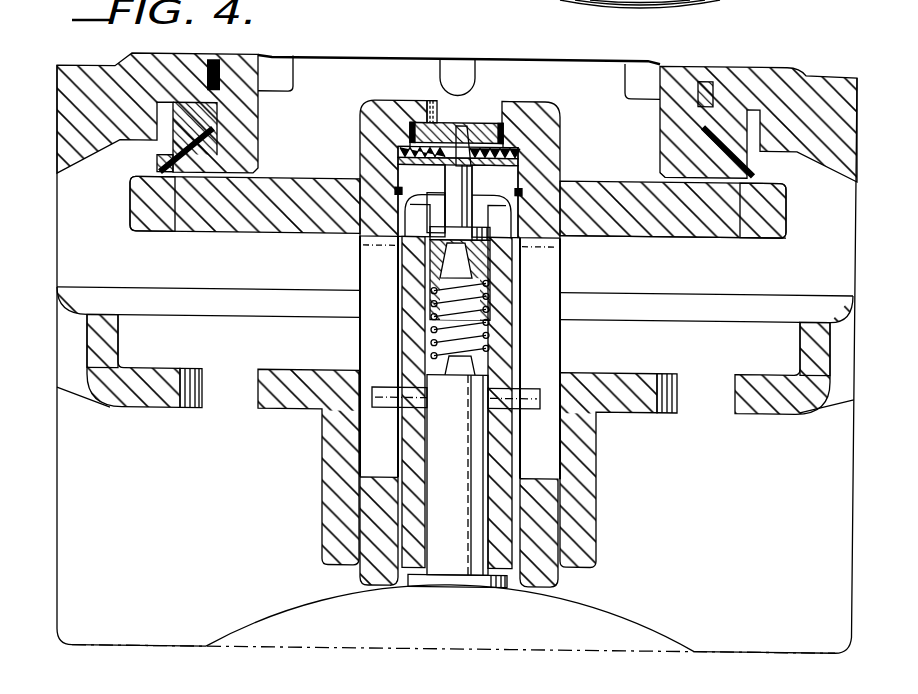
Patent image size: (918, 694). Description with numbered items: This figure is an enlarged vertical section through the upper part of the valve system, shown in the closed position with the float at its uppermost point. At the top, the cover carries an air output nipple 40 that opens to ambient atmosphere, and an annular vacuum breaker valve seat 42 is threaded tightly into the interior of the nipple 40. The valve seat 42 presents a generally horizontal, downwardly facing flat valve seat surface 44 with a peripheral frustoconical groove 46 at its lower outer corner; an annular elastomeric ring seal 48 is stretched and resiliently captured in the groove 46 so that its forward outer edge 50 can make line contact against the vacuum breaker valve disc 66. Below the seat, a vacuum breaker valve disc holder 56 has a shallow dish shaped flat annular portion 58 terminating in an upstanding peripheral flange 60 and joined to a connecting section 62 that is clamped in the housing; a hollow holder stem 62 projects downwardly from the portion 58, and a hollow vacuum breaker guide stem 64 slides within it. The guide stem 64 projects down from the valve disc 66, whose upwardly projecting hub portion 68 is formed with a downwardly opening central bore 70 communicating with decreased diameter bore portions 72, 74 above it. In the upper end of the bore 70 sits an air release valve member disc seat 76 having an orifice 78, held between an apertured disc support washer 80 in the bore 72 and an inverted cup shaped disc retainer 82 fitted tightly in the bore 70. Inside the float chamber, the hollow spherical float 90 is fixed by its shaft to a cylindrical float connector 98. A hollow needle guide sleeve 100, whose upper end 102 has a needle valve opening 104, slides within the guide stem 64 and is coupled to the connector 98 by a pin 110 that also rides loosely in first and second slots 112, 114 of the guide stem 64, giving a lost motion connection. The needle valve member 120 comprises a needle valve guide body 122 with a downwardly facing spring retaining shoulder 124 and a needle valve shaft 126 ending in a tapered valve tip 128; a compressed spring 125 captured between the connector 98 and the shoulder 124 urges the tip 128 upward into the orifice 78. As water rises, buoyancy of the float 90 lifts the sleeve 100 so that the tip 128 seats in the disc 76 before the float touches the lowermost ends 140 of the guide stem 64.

The air output nipple 40 is at (806, 69).
The annular vacuum breaker valve seat 42 is at (700, 47).
The flat valve seat surface 44 is at (232, 188).
The peripheral frustoconical groove 46 is at (178, 136).
The annular elastomeric ring seal 48 is at (155, 167).
The forward outer edge 50 is at (137, 200).
The vacuum breaker valve disc holder 56 is at (156, 424).
The shallow dish shaped flat annular portion 58 is at (181, 415).
The upstanding peripheral flange 60 is at (104, 337).
The hollow holder stem 62 is at (91, 404).
The hollow vacuum breaker guide stem 64 is at (372, 514).
The vacuum breaker valve disc 66 is at (727, 235).
The hub portion 68 is at (548, 117).
The central bore 70 is at (357, 242).
The decreased diameter bore portion 72 is at (410, 133).
The decreased diameter bore portion 74 is at (427, 112).
The air release valve member disc seat 76 is at (518, 151).
The orifice 78 is at (420, 182).
The apertured disc support washer 80 is at (500, 126).
The inverted cup shaped disc retainer 82 is at (518, 160).
The hollow spherical float 90 is at (645, 626).
The cylindrical float connector 98 is at (435, 438).
The hollow needle guide sleeve 100 is at (507, 350).
The upper end 102 is at (492, 196).
The needle valve opening 104 is at (399, 198).
The pin 110 is at (522, 395).
The first slot 112 is at (365, 340).
The second slot 114 is at (545, 312).
The needle valve member 120 is at (432, 214).
The needle valve guide body 122 is at (484, 262).
The spring retaining shoulder 124 is at (482, 291).
The compressed spring 125 is at (386, 286).
The needle valve shaft 126 is at (500, 212).
The tapered valve tip 128 is at (462, 128).
The lowermost ends 140 is at (386, 589).